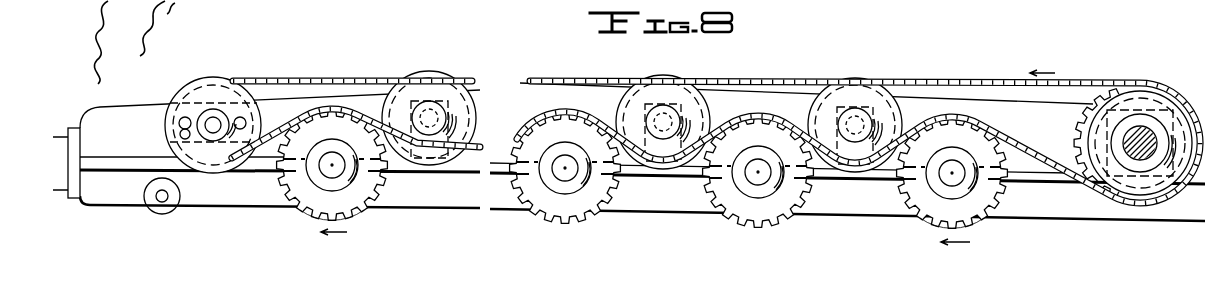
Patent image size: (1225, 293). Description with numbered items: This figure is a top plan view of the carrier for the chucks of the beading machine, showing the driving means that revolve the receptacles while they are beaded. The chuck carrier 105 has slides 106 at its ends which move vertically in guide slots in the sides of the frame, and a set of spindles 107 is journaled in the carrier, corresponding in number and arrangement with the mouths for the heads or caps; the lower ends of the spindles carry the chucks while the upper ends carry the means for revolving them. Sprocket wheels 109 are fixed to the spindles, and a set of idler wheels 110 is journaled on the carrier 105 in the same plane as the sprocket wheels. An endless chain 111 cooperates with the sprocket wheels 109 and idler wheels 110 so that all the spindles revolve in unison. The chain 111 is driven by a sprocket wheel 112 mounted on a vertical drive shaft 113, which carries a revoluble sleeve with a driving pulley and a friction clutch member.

The chuck carrier 105 is at (449, 207).
The slides 106 is at (62, 132).
The spindles 107 is at (330, 170).
The sprocket wheels 109 is at (345, 216).
The idler wheels 110 is at (214, 95).
The endless chain 111 is at (381, 80).
The sprocket wheel 112 is at (1134, 191).
The vertical drive shaft 113 is at (1142, 160).